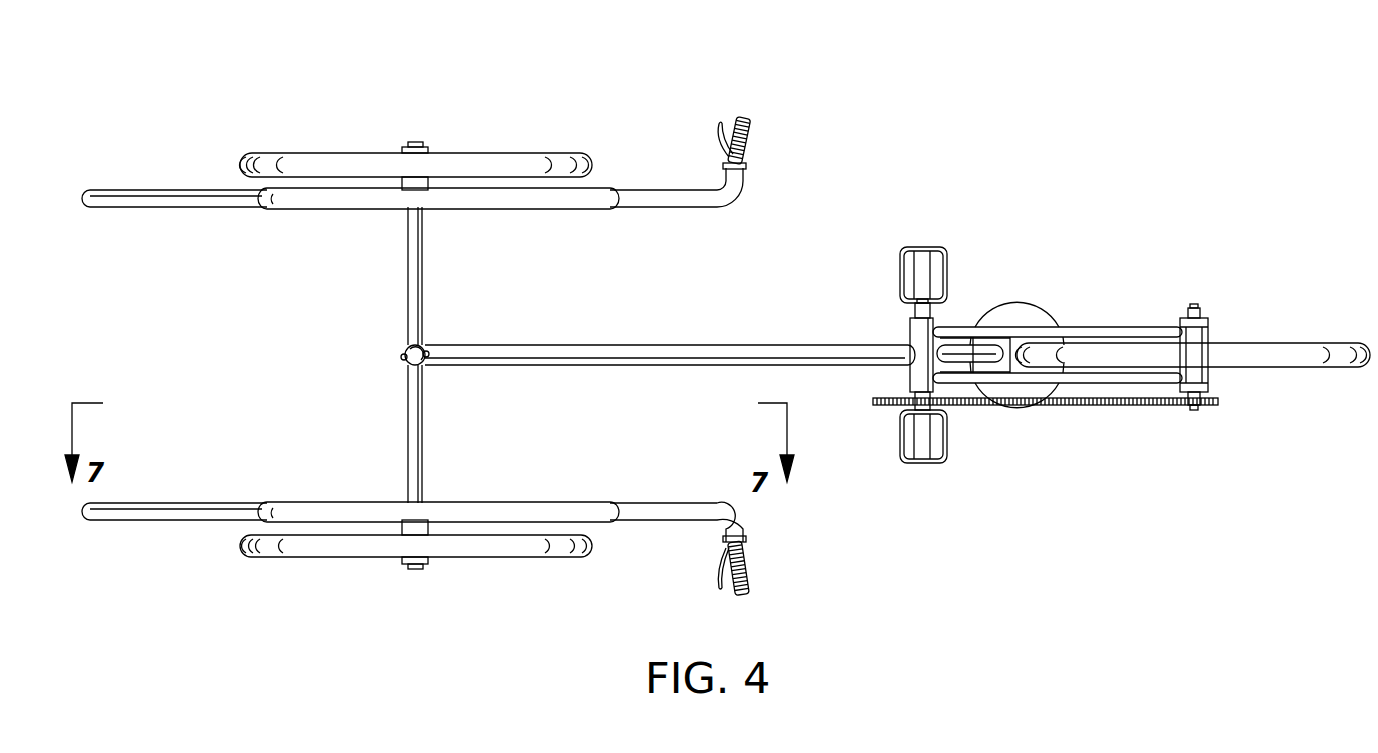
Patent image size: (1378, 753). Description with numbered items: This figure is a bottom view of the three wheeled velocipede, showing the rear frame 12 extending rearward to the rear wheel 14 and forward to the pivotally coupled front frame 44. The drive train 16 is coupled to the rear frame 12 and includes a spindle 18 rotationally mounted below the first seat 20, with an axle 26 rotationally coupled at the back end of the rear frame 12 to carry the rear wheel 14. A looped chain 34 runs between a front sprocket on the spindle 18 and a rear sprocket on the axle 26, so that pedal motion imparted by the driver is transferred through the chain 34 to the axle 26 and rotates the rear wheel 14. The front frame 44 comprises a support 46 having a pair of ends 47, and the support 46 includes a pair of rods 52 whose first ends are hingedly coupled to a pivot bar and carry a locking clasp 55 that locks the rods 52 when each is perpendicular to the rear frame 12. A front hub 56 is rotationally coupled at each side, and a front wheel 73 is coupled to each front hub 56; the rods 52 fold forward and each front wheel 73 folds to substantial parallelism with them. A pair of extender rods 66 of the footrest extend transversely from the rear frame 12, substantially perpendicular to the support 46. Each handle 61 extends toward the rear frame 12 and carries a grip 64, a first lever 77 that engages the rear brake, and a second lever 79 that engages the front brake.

The rear frame 12 is at (673, 343).
The rear wheel 14 is at (1300, 342).
The drive train 16 is at (922, 467).
The spindle 18 is at (944, 251).
The first seat 20 is at (1020, 316).
The axle 26 is at (1190, 300).
The chain 34 is at (1107, 406).
The front frame 44 is at (312, 208).
The support 46 is at (428, 420).
The ends 47 is at (425, 500).
The rods 52 is at (425, 268).
The locking clasp 55 is at (409, 347).
The front hub 56 is at (421, 141).
The handle 61 is at (757, 586).
The grip 64 is at (749, 146).
The extender rod 66 is at (178, 499).
The front wheel 73 is at (475, 152).
The first lever 77 is at (718, 570).
The second lever 79 is at (716, 127).